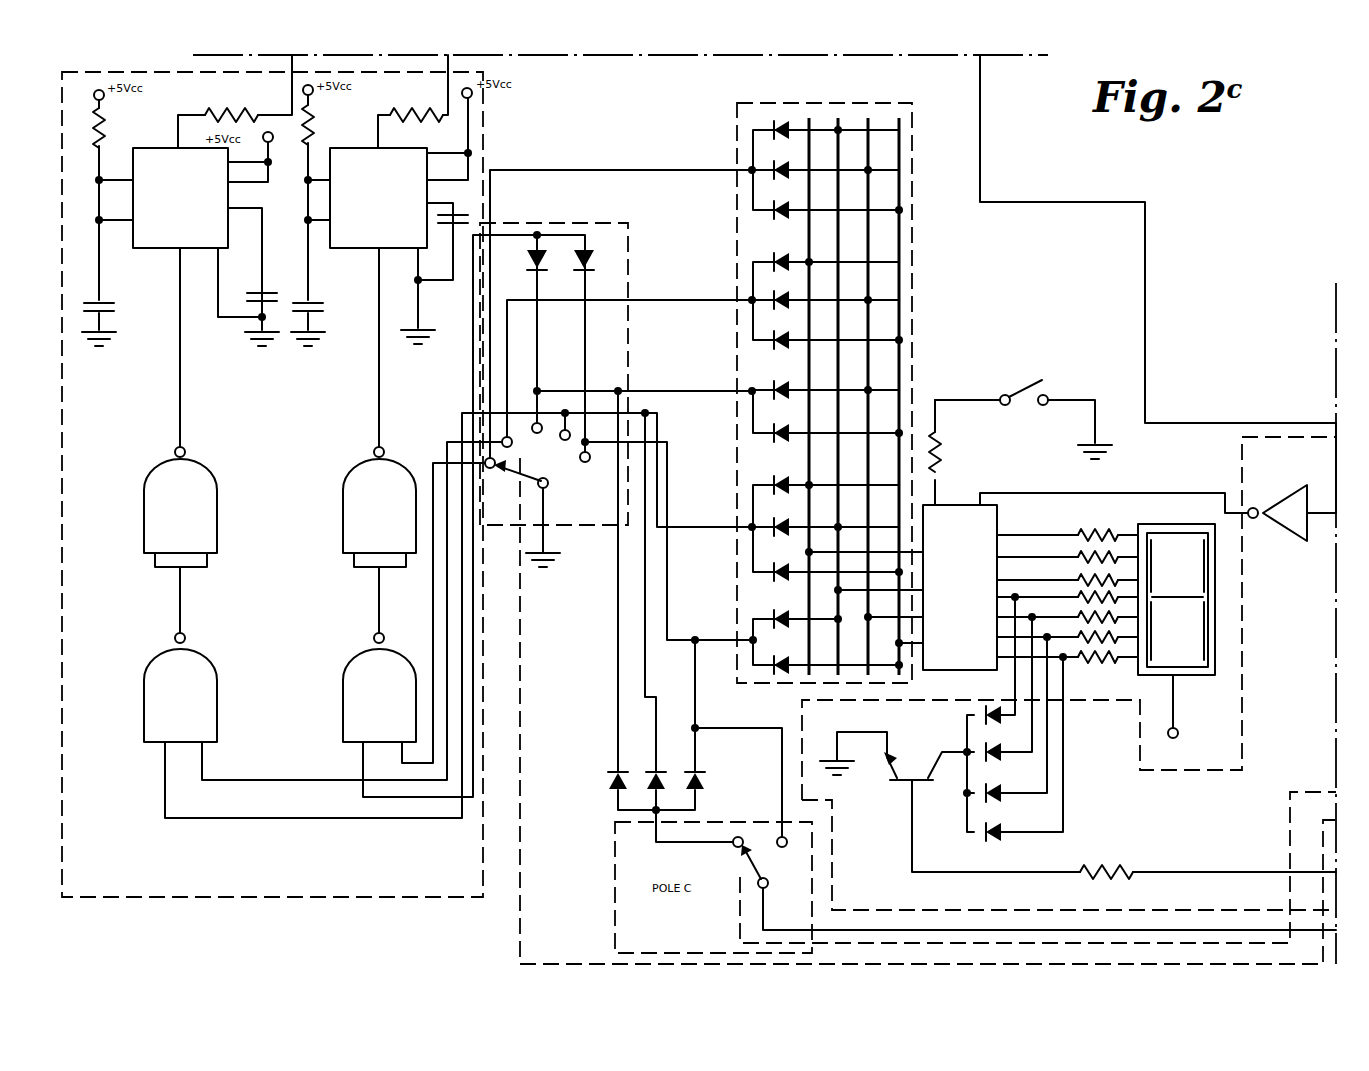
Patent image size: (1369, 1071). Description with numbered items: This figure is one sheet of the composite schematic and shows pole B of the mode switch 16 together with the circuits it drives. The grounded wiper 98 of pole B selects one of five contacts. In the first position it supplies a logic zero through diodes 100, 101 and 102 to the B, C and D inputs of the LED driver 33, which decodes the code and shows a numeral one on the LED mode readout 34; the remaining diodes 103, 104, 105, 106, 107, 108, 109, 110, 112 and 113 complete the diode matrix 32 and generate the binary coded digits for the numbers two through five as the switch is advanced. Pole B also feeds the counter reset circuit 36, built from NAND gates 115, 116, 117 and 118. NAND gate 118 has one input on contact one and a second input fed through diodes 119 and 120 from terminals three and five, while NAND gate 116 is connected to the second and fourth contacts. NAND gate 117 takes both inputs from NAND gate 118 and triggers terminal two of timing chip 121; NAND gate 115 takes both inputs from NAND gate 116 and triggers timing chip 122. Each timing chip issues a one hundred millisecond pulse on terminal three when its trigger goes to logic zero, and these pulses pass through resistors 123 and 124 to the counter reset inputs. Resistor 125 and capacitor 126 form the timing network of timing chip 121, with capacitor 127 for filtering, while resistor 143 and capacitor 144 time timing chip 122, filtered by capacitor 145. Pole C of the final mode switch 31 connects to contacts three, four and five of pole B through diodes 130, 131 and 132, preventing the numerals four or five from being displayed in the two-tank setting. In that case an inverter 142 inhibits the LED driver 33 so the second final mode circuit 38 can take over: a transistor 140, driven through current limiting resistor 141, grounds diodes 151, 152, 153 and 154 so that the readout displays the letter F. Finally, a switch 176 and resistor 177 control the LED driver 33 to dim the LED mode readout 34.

The mode switch 16 is at (593, 527).
The final mode switch 31 is at (612, 917).
The diode matrix 32 is at (912, 157).
The LED driver 33 is at (958, 505).
The LED mode readout 34 is at (1215, 664).
The counter reset circuit 36 is at (263, 900).
The second final mode circuit 38 is at (1272, 437).
The wiper 98 is at (492, 470).
The diode 100 is at (781, 120).
The diode 101 is at (775, 163).
The diode 102 is at (775, 205).
The diode 103 is at (775, 262).
The diode 104 is at (775, 302).
The diode 105 is at (775, 342).
The diode 106 is at (775, 388).
The diode 107 is at (775, 433).
The diode 108 is at (775, 485).
The diode 109 is at (775, 527).
The diode 110 is at (775, 572).
The diode 112 is at (775, 619).
The diode 113 is at (781, 676).
The NAND gate 115 is at (144, 498).
The NAND gate 116 is at (144, 730).
The NAND gate 117 is at (343, 518).
The NAND gate 118 is at (343, 703).
The diode 119 is at (545, 258).
The diode 120 is at (594, 260).
The timing chip 121 is at (430, 148).
The timing chip 122 is at (160, 249).
The resistor 123 is at (210, 118).
The resistor 124 is at (436, 120).
The resistor 125 is at (343, 131).
The capacitor 126 is at (325, 298).
The capacitor 127 is at (470, 218).
The diode 130 is at (612, 780).
The diode 131 is at (648, 772).
The diode 132 is at (705, 781).
The transistor 140 is at (900, 788).
The current limiting resistor 141 is at (1130, 869).
The inverter 142 is at (1281, 541).
The resistor 143 is at (92, 128).
The capacitor 144 is at (118, 310).
The capacitor 145 is at (248, 297).
The diode 151 is at (1003, 718).
The diode 152 is at (1000, 748).
The diode 153 is at (1003, 796).
The diode 154 is at (995, 841).
The switch 176 is at (1025, 386).
The resistor 177 is at (946, 446).